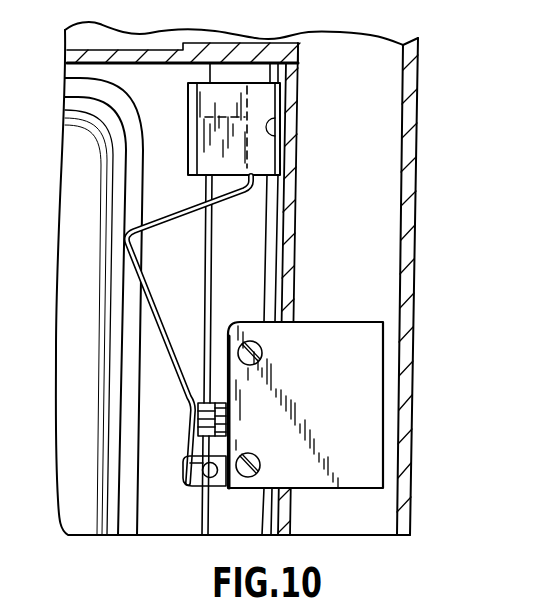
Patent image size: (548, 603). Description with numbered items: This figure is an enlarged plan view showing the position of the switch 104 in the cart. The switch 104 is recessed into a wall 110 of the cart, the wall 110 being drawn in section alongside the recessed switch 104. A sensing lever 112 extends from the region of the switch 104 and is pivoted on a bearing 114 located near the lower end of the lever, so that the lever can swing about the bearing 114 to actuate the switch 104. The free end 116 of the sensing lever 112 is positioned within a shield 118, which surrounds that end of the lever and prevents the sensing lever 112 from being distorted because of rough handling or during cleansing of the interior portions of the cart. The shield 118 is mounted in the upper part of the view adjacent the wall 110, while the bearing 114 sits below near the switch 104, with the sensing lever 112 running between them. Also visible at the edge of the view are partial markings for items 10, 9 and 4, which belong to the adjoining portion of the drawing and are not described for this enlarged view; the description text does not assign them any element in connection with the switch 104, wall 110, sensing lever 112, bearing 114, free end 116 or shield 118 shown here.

The door assembly 10 is at (0, 167).
The direction arrow 9 is at (4, 285).
The cabinet 4 is at (3, 296).
The switch 104 is at (355, 470).
The wall 110 is at (355, 228).
The sensing lever 112 is at (172, 364).
The bearing 114 is at (198, 490).
The free end 116 is at (213, 117).
The shield 118 is at (252, 190).